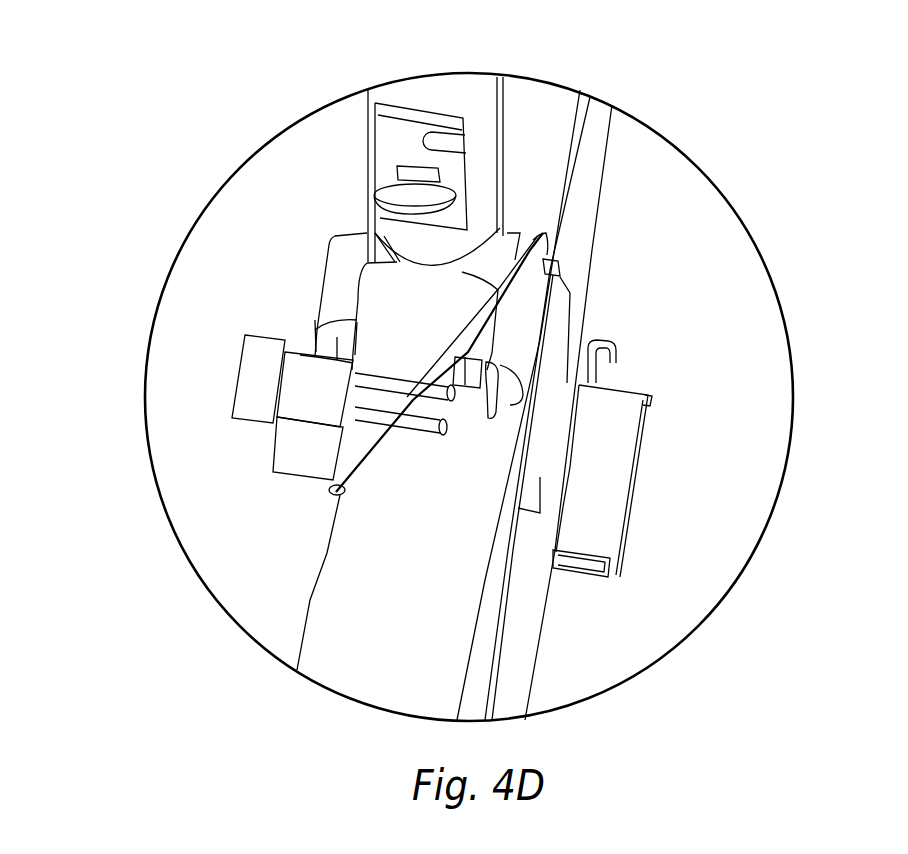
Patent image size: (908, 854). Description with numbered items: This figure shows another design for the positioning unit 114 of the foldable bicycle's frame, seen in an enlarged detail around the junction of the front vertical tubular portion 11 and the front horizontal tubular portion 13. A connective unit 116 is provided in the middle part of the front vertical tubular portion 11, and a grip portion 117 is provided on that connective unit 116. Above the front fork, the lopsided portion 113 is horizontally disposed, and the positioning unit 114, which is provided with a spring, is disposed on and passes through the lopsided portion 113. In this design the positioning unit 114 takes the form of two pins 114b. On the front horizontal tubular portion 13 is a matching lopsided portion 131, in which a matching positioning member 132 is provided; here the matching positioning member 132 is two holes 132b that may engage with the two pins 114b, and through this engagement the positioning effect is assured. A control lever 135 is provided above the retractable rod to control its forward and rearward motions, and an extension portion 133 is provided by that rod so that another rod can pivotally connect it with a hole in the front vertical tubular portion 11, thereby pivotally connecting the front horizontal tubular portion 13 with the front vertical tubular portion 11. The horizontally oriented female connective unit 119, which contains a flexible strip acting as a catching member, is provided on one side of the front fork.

The front vertical tubular portion 11 is at (490, 140).
The connective unit 116 is at (397, 150).
The grip portion 117 is at (372, 200).
The lopsided portion 113 is at (380, 307).
The positioning unit 114 is at (243, 376).
The pins 114b is at (367, 415).
The matching lopsided portion 131 is at (450, 475).
The front horizontal tubular portion 13 is at (387, 568).
The extension portion 133 is at (558, 258).
The control lever 135 is at (490, 400).
The female connective unit 119 is at (600, 480).
The matching positioning member 132 is at (448, 418).
The holes 132b is at (443, 435).